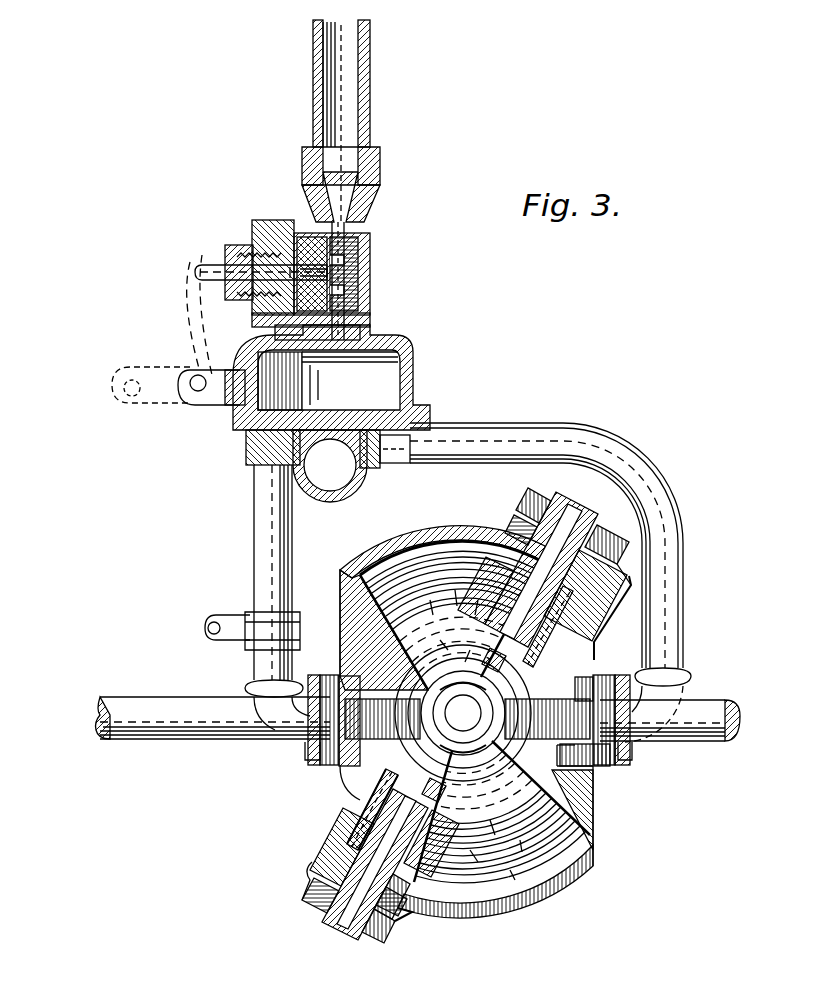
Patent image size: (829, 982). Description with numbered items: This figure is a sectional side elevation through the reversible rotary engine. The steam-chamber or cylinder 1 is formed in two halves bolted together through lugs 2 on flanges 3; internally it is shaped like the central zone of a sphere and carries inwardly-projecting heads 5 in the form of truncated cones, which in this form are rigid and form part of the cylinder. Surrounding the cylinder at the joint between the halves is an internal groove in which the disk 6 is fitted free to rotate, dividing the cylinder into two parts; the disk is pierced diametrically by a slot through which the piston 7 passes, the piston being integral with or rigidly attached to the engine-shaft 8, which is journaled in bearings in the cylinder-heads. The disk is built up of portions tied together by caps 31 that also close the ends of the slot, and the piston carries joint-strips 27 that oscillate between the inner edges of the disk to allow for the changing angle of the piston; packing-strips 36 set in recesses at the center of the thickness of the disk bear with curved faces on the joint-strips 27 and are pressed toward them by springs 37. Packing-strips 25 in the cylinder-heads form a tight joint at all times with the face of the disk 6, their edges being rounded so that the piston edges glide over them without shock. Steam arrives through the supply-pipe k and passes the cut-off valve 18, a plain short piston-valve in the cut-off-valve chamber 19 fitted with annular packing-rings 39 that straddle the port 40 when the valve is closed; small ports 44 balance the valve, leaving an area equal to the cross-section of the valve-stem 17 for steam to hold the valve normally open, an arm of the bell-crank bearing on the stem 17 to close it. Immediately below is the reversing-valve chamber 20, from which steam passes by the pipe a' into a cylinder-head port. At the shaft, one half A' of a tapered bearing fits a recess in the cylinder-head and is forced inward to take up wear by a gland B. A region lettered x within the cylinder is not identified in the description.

The supply-pipe k is at (343, 121).
The port 40 is at (352, 224).
The cut-off valve 18 is at (305, 256).
The cut-off-valve chamber 19 is at (372, 281).
The small ports 44 is at (302, 220).
The annular packing-rings 39 is at (313, 233).
The valve-stem 17 is at (216, 268).
The reversing-valve chamber 20 is at (271, 413).
The pipe a' is at (550, 582).
The engine-shaft 8 is at (727, 712).
The steam-chamber (cylinder) 1 is at (552, 893).
The half of tapered bearing A' is at (469, 708).
The glands B is at (310, 752).
The piston 7 is at (463, 713).
The inwardly-projecting heads 5 is at (475, 717).
The flanges 3 is at (580, 508).
The lugs 2 is at (392, 942).
The packing-strips 25 is at (606, 592).
The springs 37 is at (545, 668).
The joint-strips 27 is at (442, 690).
The packing-strips 36 is at (474, 690).
The caps 31 is at (598, 772).
The space x is at (413, 828).
The disk 6 is at (410, 910).